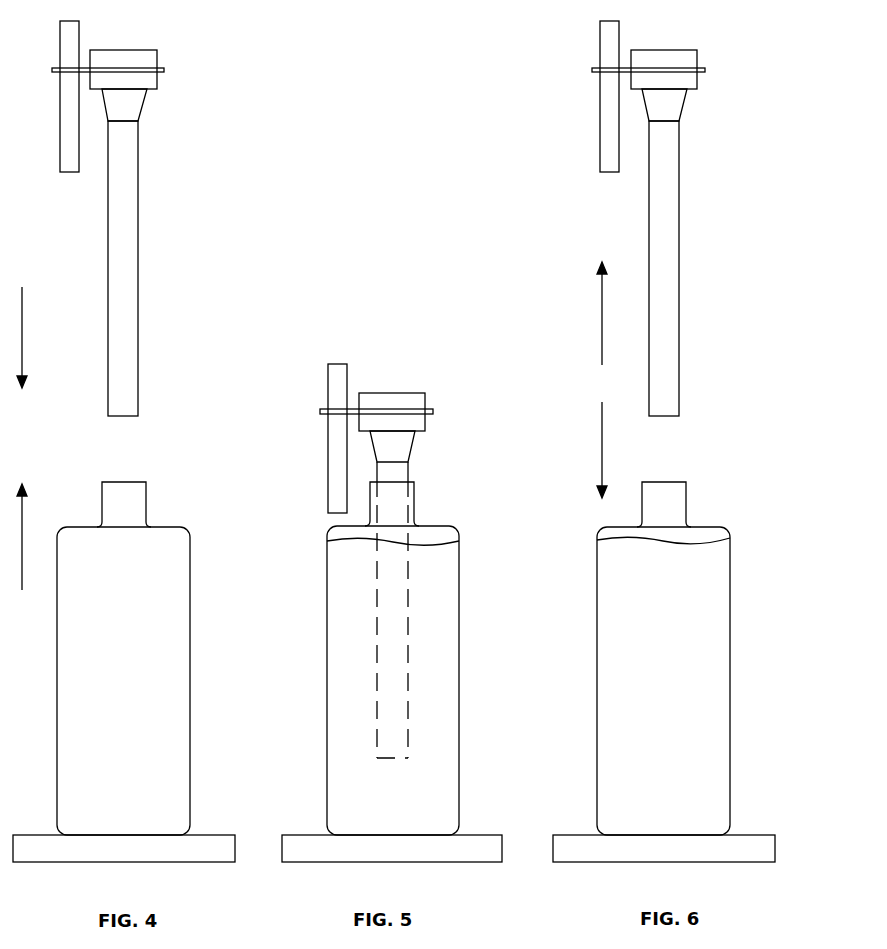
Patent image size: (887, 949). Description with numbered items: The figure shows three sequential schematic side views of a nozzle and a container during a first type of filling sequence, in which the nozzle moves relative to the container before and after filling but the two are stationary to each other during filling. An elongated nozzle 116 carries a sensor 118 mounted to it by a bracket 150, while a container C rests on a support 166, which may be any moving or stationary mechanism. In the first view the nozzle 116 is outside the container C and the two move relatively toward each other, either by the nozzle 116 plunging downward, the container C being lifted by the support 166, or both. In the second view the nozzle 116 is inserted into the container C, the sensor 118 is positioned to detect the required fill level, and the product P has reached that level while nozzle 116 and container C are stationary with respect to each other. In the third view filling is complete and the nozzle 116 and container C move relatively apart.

In FIG. 4, the nozzle 116 is at (134, 112).
In FIG. 5, the nozzle 116 is at (403, 447).
In FIG. 6, the nozzle 116 is at (678, 117).
In FIG. 4, the sensor 118 is at (60, 130).
In FIG. 5, the sensor 118 is at (330, 462).
In FIG. 6, the sensor 118 is at (600, 138).
In FIG. 4, the bracket 150 is at (164, 70).
In FIG. 5, the bracket 150 is at (433, 411).
In FIG. 6, the bracket 150 is at (705, 70).
In FIG. 4, the support 166 is at (125, 853).
In FIG. 5, the support 166 is at (353, 853).
In FIG. 6, the support 166 is at (620, 848).
In FIG. 4, the container C is at (190, 588).
In FIG. 5, the container C is at (459, 593).
In FIG. 6, the container C is at (730, 585).
In FIG. 5, the product P is at (433, 542).
In FIG. 6, the product P is at (722, 535).